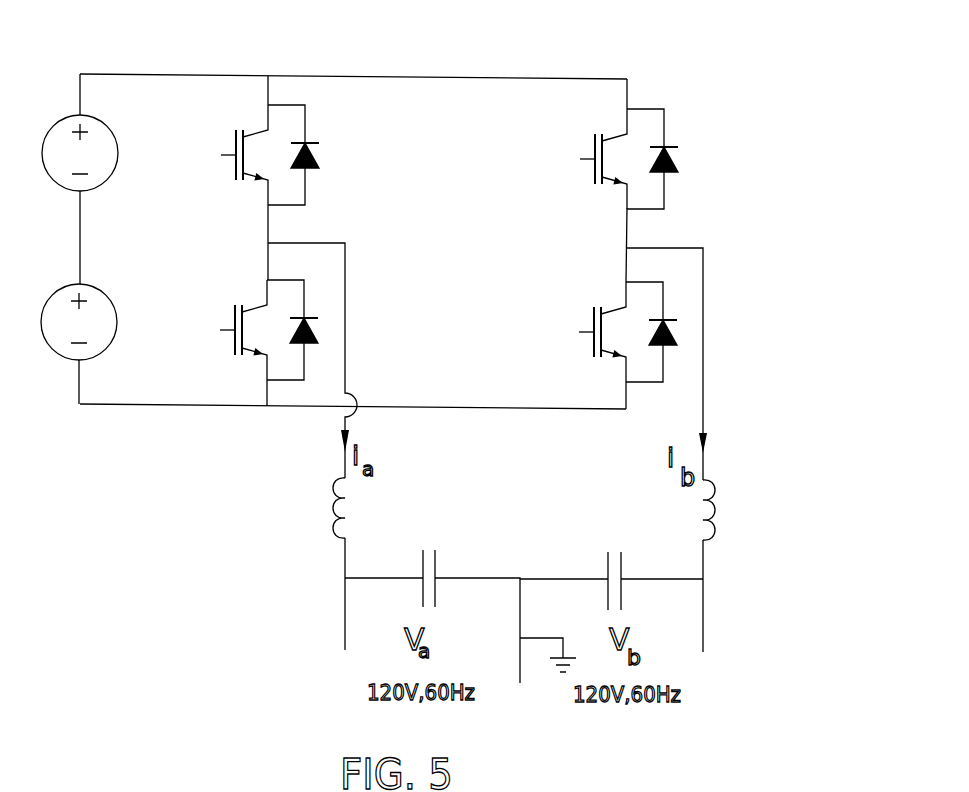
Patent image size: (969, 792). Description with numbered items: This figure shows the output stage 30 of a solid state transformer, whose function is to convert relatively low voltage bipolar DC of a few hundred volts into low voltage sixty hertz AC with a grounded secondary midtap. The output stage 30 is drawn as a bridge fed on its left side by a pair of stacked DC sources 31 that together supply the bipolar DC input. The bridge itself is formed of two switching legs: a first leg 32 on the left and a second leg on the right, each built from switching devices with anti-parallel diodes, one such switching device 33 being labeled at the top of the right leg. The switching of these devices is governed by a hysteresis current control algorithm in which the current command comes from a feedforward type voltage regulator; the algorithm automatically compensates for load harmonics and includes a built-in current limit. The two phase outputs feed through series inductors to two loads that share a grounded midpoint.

The output stage 30 is at (418, 206).
The DC voltage sources 31 is at (122, 59).
The first inverter leg (phase a switches) 32 is at (329, 65).
The switching device with anti-parallel diode 33 is at (659, 96).